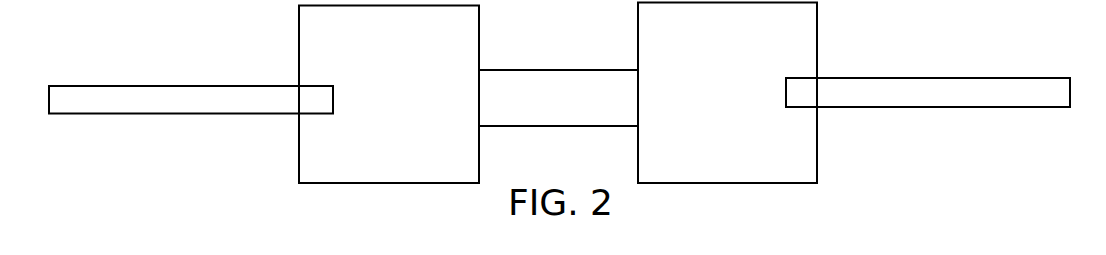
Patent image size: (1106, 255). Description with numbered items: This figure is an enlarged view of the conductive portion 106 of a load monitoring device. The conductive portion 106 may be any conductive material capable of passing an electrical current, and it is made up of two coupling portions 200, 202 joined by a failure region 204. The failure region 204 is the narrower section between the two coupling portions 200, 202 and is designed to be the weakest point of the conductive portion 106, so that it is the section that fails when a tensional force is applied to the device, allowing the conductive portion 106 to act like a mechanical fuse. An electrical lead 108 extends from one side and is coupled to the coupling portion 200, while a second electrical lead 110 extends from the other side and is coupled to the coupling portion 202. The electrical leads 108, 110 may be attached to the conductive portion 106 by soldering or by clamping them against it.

The conductive portion 106 is at (845, 62).
The electrical lead 108 is at (106, 114).
The electrical lead 110 is at (1012, 107).
The coupling portion 200 is at (377, 183).
The coupling portion 202 is at (728, 183).
The failure region 204 is at (530, 70).